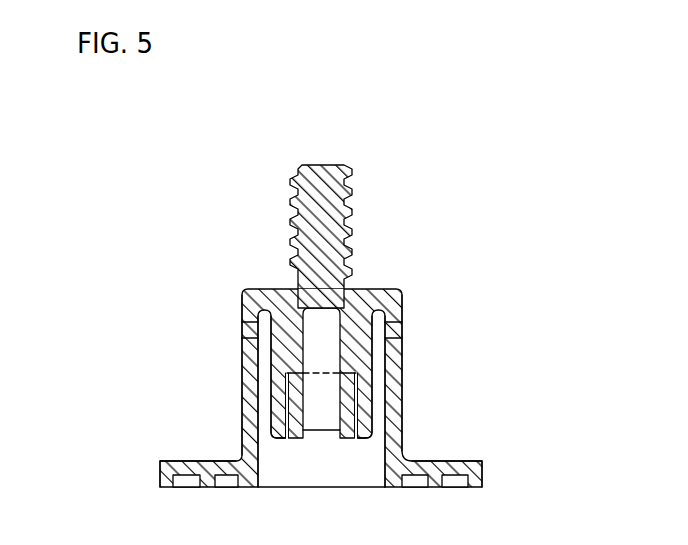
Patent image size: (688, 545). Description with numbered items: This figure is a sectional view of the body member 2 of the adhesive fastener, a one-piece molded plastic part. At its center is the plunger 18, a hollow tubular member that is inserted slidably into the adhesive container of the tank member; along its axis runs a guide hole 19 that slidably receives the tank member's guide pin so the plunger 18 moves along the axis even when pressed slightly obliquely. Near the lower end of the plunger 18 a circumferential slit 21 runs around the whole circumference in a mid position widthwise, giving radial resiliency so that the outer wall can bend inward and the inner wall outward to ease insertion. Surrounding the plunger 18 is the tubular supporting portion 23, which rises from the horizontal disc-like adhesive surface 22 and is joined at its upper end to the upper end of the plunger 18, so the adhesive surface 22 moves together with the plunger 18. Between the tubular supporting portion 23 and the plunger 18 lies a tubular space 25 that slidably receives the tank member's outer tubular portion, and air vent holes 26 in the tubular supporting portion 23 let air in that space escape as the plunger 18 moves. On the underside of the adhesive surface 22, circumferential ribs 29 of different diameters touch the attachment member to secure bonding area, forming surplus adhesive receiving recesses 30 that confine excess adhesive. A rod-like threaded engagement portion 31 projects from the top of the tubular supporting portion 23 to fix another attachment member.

The body member 2 is at (432, 246).
The plunger 18 is at (360, 360).
The guide hole 19 is at (327, 330).
The circumferential slit 21 is at (287, 425).
The adhesive surface 22 is at (183, 461).
The tubular supporting portion 23 is at (248, 392).
The tubular space 25 is at (267, 337).
The air vent holes 26 is at (243, 323).
The circumferential ribs 29 is at (433, 486).
The surplus adhesive receiving recesses 30 is at (223, 483).
The engagement portion 31 is at (338, 212).